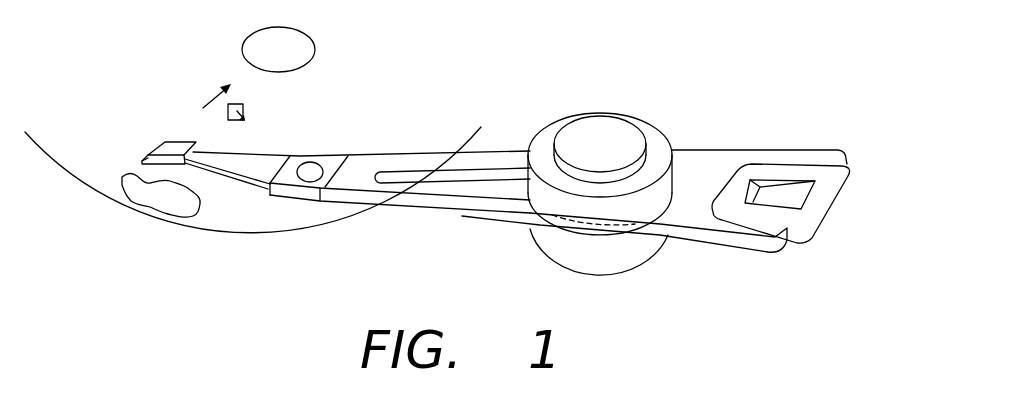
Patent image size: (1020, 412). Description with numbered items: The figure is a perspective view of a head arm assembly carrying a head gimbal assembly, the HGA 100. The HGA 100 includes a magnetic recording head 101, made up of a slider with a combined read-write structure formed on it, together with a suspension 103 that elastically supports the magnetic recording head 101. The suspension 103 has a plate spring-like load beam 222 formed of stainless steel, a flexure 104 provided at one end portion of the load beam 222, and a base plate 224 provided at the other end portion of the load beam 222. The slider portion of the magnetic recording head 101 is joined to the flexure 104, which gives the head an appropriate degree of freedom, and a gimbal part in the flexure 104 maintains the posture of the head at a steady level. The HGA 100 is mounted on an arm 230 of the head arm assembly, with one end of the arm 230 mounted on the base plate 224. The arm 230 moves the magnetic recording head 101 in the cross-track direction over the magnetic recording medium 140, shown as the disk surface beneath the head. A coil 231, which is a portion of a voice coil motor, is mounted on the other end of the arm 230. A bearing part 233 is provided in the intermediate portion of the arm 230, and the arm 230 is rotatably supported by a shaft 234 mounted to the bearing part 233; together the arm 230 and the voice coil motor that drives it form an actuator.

The HGA 100 is at (256, 149).
The magnetic recording head 101 is at (160, 142).
The suspension 103 is at (457, 110).
The flexure 104 is at (143, 160).
The magnetic recording medium 140 is at (137, 213).
The load beam 222 is at (272, 160).
The base plate 224 is at (340, 157).
The arm 230 is at (413, 207).
The coil 231 is at (827, 215).
The bearing part 233 is at (552, 133).
The shaft 234 is at (603, 135).